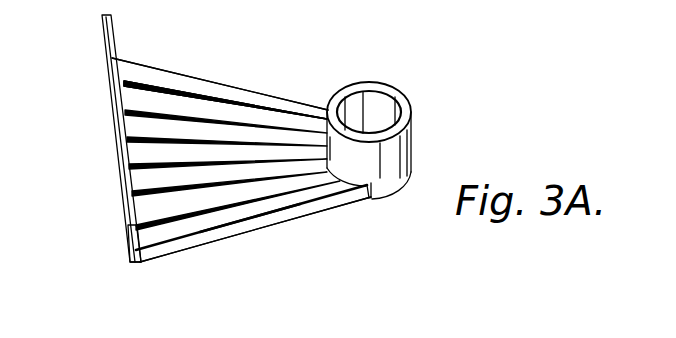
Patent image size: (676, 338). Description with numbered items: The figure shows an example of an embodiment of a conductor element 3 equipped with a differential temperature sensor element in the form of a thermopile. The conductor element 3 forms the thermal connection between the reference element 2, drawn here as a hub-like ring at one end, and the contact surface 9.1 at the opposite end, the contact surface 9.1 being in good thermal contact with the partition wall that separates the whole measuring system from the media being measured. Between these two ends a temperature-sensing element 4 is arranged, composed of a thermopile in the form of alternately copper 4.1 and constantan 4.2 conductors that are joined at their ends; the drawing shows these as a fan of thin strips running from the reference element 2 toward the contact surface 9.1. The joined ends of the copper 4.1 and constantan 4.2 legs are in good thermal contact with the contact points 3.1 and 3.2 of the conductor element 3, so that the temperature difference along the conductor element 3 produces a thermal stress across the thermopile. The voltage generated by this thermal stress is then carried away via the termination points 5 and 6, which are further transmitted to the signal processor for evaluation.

The reference element 2 is at (415, 133).
The conductor element 3 is at (349, 199).
The contact point 3.1 is at (313, 193).
The contact point 3.2 is at (142, 208).
The temperature-sensing element 4 is at (177, 140).
The copper 4.1 is at (202, 92).
The constantan 4.2 is at (275, 113).
The termination point 5 is at (239, 99).
The termination point 6 is at (258, 210).
The contact surface 9.1 is at (103, 42).